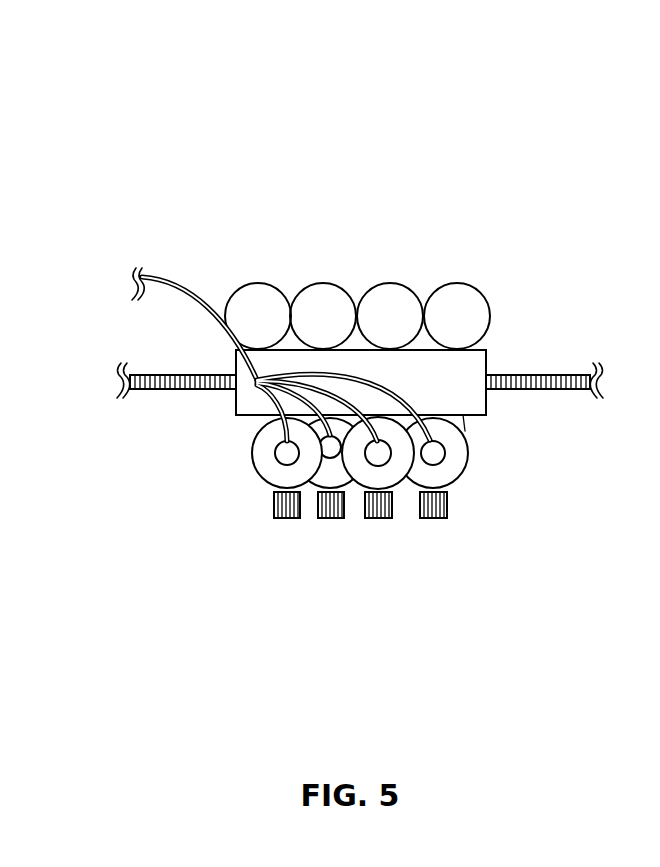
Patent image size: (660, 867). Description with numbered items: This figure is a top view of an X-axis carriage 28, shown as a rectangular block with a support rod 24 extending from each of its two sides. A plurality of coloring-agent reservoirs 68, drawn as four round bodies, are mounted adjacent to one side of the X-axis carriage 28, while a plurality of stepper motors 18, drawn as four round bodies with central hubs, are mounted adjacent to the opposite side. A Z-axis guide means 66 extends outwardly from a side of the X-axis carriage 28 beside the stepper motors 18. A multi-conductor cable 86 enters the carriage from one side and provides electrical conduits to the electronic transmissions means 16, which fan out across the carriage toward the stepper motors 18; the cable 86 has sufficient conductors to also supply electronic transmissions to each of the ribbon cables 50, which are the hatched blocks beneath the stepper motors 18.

The electronic transmissions means 16 is at (327, 387).
The stepper motors 18 is at (260, 472).
The support rod 24 is at (177, 375).
The X-axis carriage 28 is at (452, 362).
The ribbon cables 50 is at (280, 523).
The Z-axis guide means 66 is at (256, 423).
The coloring-agent reservoirs 68 is at (246, 294).
The multi-conductor cable 86 is at (172, 278).